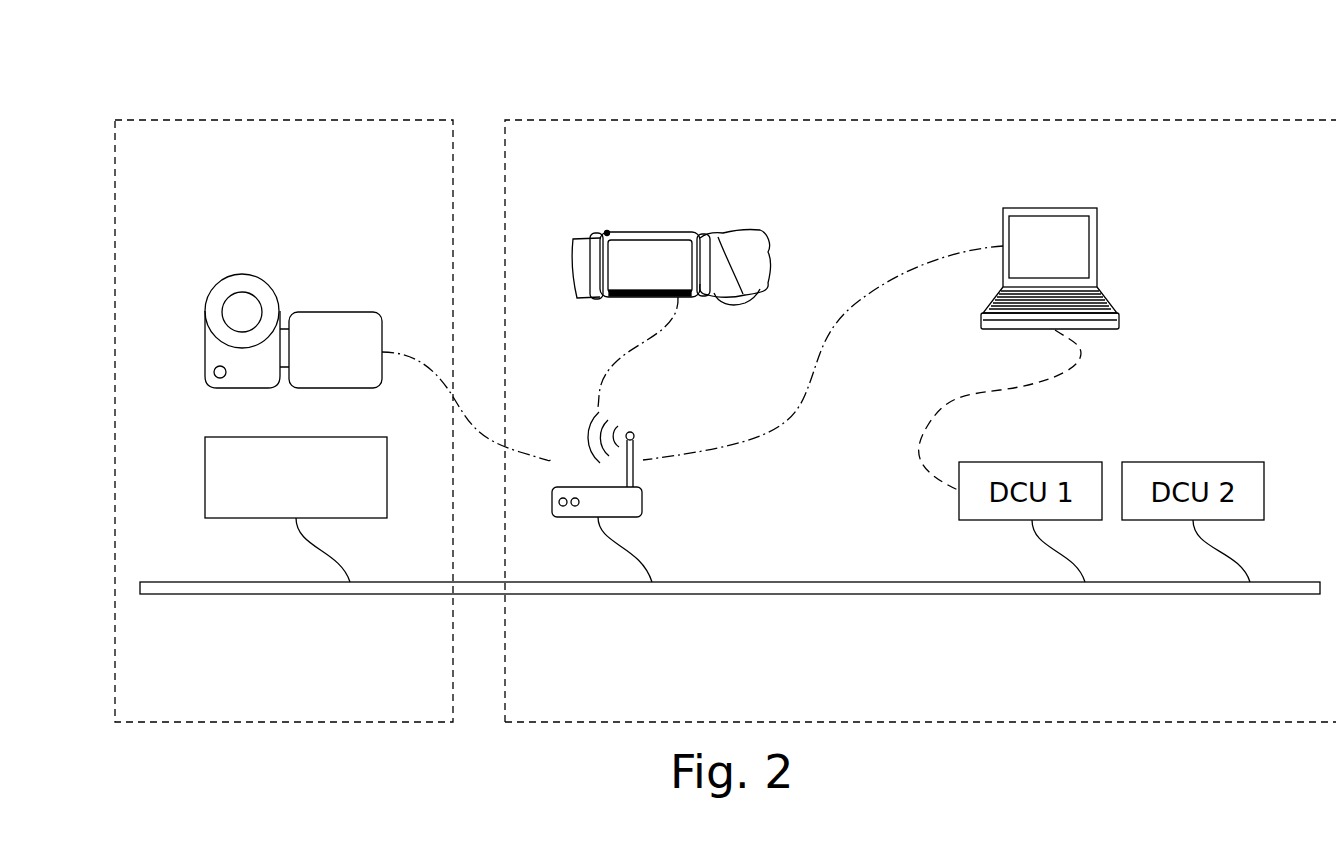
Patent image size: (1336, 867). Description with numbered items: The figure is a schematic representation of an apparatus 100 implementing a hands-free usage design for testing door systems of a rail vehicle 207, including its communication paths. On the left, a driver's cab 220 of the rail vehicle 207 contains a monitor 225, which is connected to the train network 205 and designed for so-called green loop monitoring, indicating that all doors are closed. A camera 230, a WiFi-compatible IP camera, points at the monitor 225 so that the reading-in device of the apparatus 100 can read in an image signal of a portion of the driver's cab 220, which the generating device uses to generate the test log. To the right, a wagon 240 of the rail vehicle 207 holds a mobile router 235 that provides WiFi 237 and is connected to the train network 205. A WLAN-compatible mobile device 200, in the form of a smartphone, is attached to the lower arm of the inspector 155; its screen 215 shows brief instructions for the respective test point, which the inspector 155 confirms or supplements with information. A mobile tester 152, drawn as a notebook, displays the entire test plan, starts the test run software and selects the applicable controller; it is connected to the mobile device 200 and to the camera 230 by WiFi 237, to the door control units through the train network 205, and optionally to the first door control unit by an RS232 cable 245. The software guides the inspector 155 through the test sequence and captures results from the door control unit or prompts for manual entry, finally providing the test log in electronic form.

The apparatus 100 is at (1025, 234).
The mobile tester 152 is at (1097, 240).
The inspector 155 is at (742, 246).
The mobile device 200 is at (658, 232).
The train network 205 is at (803, 594).
The rail vehicle 207 is at (210, 150).
The screen 215 is at (603, 228).
The driver's cab 220 is at (380, 119).
The monitor 225 is at (296, 509).
The camera 230 is at (293, 331).
The mobile router 235 is at (642, 497).
The WiFi 237 is at (381, 352).
The wagon 240 is at (527, 119).
The RS232 cable 245 is at (1082, 352).